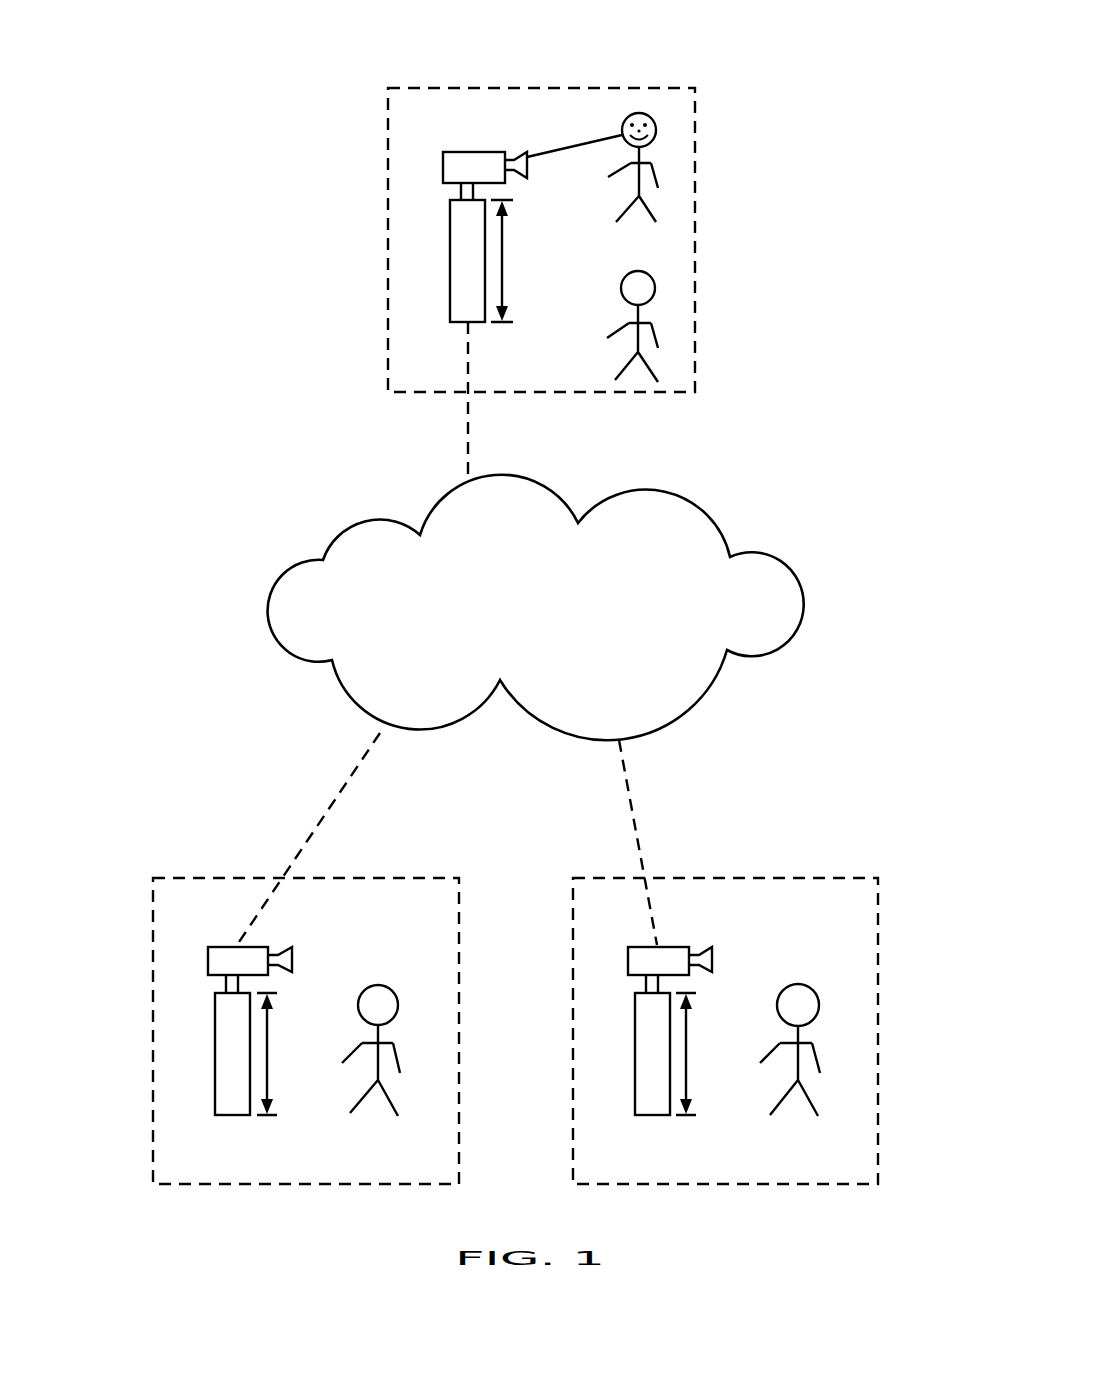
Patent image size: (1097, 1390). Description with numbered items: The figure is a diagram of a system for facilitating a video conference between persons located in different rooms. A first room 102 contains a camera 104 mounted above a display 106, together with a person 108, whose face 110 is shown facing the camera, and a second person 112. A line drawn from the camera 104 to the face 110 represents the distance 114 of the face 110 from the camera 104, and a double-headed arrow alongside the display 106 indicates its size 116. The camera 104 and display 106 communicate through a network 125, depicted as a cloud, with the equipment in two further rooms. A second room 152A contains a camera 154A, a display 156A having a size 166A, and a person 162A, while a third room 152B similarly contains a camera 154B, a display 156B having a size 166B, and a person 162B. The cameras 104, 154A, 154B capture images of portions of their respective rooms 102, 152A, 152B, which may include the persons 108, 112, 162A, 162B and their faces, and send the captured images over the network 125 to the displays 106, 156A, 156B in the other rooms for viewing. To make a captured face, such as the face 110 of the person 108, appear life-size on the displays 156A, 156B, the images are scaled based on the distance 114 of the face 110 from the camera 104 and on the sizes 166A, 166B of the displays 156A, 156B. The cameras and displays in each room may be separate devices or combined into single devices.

The room 102 is at (410, 88).
The camera 104 is at (445, 172).
The display 106 is at (450, 293).
The person 108 is at (682, 201).
The face 110 is at (660, 128).
The person 112 is at (660, 285).
The distance 114 is at (571, 162).
The size 116 is at (506, 276).
The network 125 is at (536, 608).
The room 152A is at (178, 878).
The camera 154A is at (208, 962).
The display 156A is at (215, 1083).
The person 162A is at (419, 1076).
The size 166A is at (272, 1070).
The room 152B is at (808, 878).
The camera 154B is at (628, 962).
The display 156B is at (635, 1072).
The person 162B is at (839, 1083).
The size 166B is at (692, 1059).